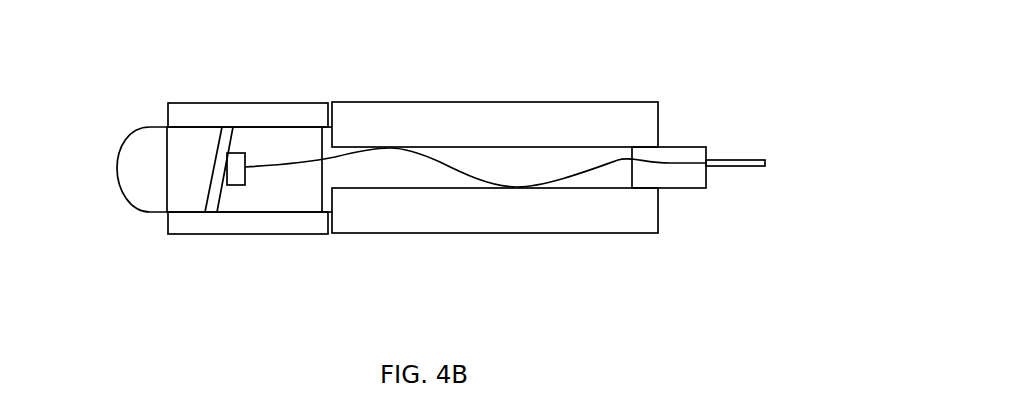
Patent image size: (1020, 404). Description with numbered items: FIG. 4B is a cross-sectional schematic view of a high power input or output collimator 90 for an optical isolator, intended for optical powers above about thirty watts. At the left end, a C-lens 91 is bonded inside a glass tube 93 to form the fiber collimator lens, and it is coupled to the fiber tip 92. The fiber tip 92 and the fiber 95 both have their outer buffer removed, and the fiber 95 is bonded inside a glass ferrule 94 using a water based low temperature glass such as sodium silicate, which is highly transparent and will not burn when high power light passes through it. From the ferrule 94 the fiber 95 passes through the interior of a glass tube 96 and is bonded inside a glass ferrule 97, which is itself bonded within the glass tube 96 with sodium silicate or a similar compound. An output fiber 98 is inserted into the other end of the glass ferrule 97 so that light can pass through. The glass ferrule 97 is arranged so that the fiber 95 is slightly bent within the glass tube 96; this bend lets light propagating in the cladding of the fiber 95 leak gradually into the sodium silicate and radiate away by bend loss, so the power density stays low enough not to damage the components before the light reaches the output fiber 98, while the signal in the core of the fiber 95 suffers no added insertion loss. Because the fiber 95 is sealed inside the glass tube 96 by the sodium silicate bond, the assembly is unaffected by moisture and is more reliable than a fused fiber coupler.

The optical probe assembly 90 is at (645, 26).
The C-lens 91 is at (132, 143).
The fiber tip 92 is at (225, 185).
The glass tube 93 is at (242, 103).
The glass ferrule 94 is at (277, 192).
The fiber 95 is at (335, 158).
The glass tube 96 is at (502, 233).
The glass ferrule 97 is at (688, 146).
The output fiber 98 is at (725, 168).